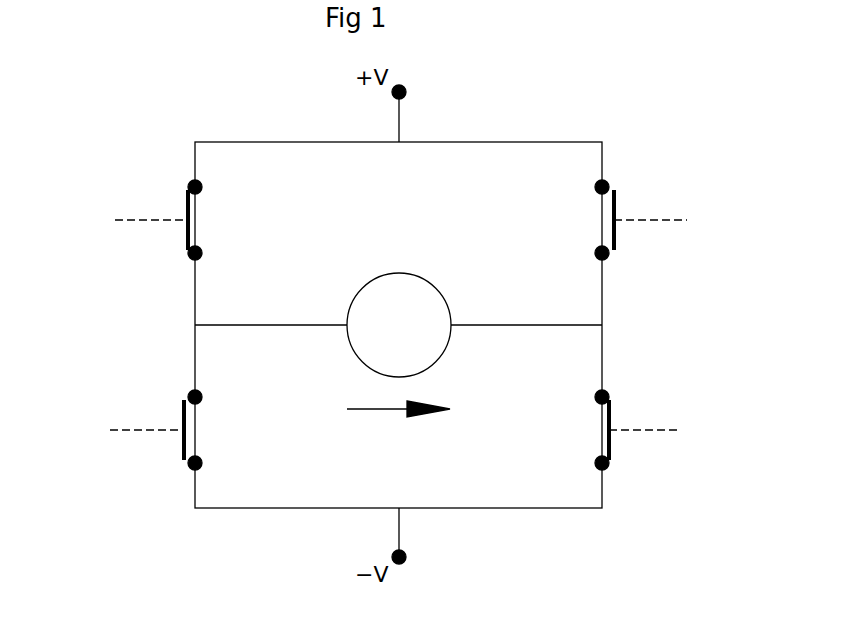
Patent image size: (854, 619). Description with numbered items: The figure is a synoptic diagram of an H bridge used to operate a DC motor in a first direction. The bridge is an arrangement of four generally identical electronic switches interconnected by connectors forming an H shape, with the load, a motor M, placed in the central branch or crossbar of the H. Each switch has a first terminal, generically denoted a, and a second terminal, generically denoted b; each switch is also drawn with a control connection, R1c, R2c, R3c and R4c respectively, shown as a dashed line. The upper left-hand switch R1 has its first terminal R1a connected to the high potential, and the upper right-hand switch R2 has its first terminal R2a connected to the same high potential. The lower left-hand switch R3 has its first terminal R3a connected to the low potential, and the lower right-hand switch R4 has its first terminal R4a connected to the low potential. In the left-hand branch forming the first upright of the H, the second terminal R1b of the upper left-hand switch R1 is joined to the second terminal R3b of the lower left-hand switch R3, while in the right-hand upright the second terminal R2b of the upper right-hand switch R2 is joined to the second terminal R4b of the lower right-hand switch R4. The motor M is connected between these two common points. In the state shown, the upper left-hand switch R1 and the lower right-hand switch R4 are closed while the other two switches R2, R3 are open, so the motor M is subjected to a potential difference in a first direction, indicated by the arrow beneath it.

The motor M is at (399, 325).
The upper left-hand switch R1 is at (212, 220).
The first terminal of the upper left-hand switch R1a is at (195, 187).
The second terminal of the upper left-hand switch R1b is at (195, 253).
The first transistor control terminal R1c is at (140, 220).
The upper right-hand switch R2 is at (587, 220).
The first terminal of the upper right-hand switch R2a is at (602, 187).
The second terminal of the upper right-hand switch R2b is at (602, 253).
The second transistor control terminal R2c is at (657, 220).
The lower left-hand switch R3 is at (210, 430).
The first terminal of the lower left-hand switch R3a is at (195, 463).
The second terminal of the lower left-hand switch R3b is at (195, 397).
The third transistor control terminal R3c is at (140, 430).
The lower right-hand switch R4 is at (584, 430).
The first terminal of the lower right-hand switch R4a is at (602, 463).
The second terminal of the lower right-hand switch R4b is at (602, 397).
The fourth transistor control terminal R4c is at (657, 430).